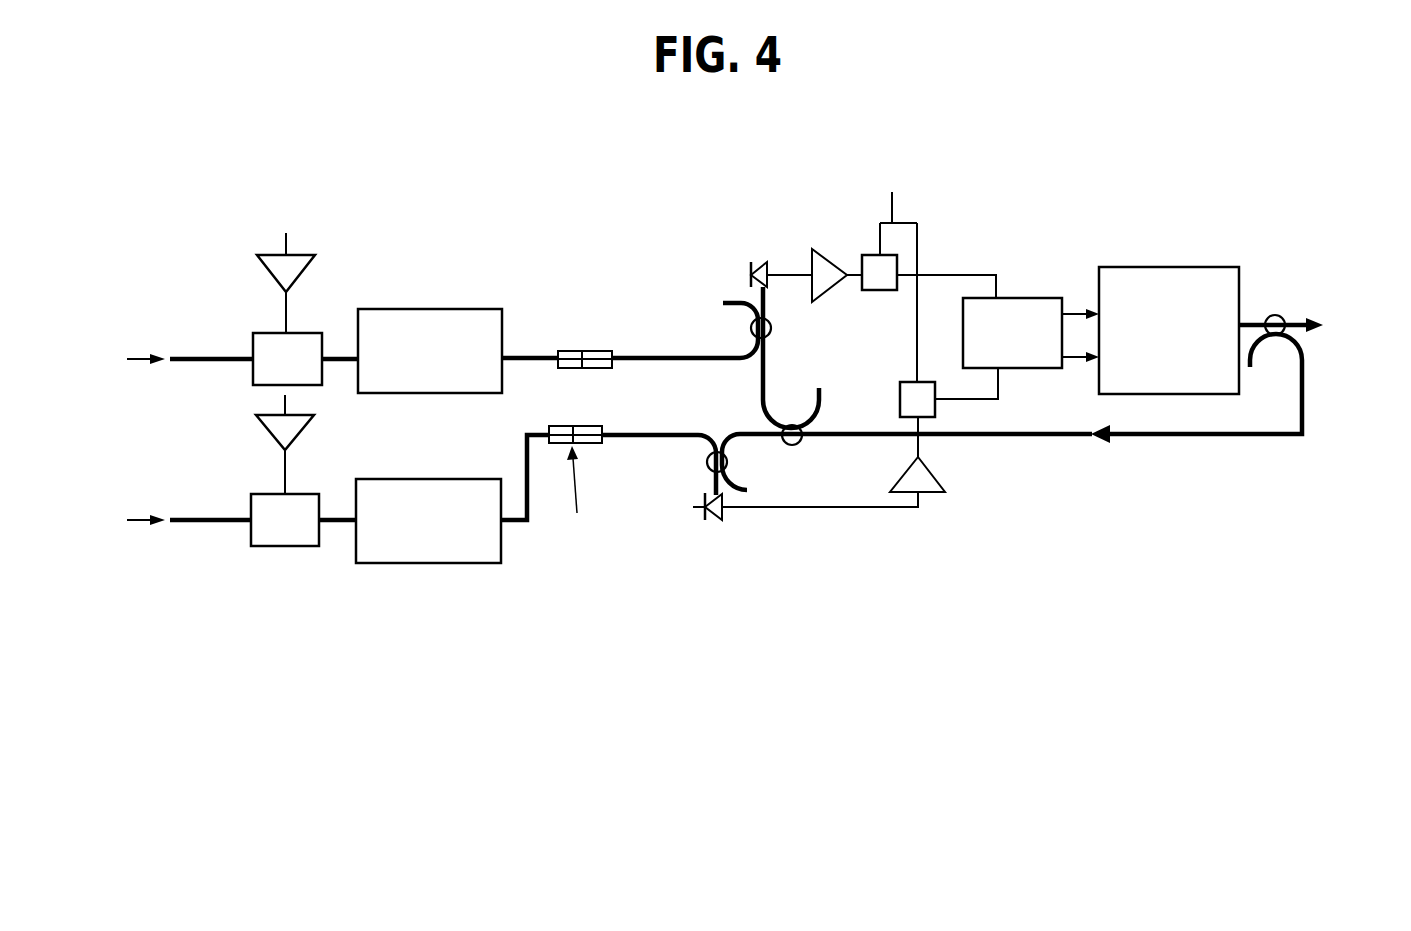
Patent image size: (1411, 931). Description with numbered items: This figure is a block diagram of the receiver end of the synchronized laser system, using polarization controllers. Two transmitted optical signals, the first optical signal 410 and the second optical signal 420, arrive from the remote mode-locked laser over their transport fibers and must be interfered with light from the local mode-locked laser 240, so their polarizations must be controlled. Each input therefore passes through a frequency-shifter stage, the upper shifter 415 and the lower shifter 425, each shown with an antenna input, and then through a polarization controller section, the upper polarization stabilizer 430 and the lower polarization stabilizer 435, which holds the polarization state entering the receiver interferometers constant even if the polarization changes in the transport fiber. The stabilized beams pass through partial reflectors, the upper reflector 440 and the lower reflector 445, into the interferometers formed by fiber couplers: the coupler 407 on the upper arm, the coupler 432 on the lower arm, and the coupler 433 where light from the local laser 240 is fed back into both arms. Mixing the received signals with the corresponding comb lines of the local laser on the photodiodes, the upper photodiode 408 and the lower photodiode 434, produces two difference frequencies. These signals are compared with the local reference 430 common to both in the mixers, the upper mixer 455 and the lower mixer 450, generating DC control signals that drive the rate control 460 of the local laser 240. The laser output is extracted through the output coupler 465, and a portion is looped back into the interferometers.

The transmitted optical signal λ1 410 is at (171, 359).
The transmitted optical signal λ2 420 is at (170, 520).
The first frequency shifter (FFS) with antenna 415 is at (300, 333).
The second frequency shifter (FFS) with antenna 425 is at (300, 494).
The local reference 430 is at (430, 309).
The polarization stabilizer 435 is at (430, 479).
The 50% reflector 440 is at (583, 351).
The 50% reflector 445 is at (573, 426).
The fiber coupler 407 is at (771, 331).
The photodetector 408 is at (749, 263).
The amplifier and mixer 455 is at (859, 254).
The rate control 460 is at (1025, 298).
The ML2 240 is at (1205, 267).
The output coupler 465 is at (1271, 315).
The fiber coupler 433 is at (792, 425).
The mixer 450 is at (900, 399).
The fiber coupler 432 is at (728, 463).
The photodetector 434 is at (712, 523).